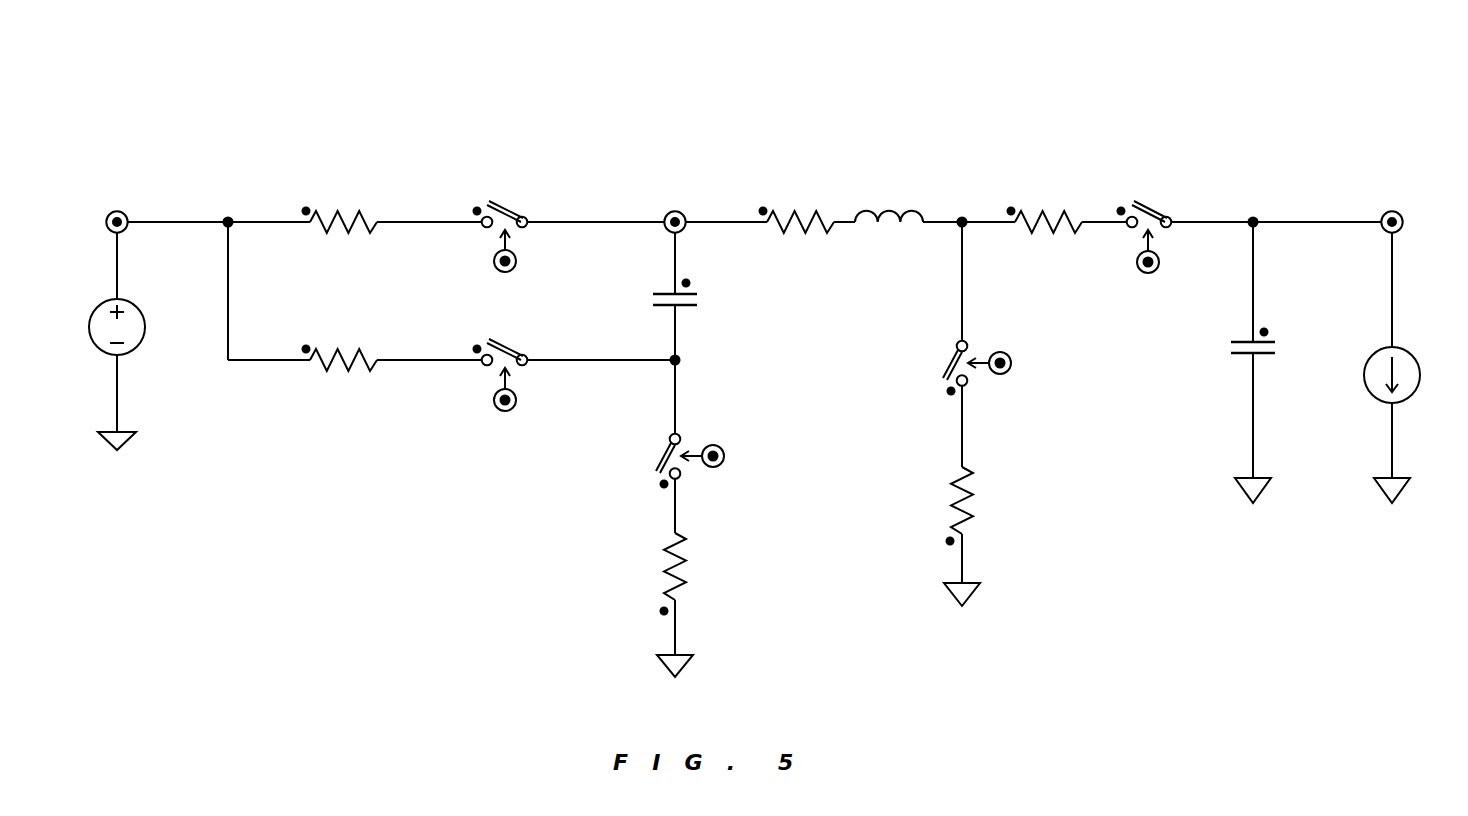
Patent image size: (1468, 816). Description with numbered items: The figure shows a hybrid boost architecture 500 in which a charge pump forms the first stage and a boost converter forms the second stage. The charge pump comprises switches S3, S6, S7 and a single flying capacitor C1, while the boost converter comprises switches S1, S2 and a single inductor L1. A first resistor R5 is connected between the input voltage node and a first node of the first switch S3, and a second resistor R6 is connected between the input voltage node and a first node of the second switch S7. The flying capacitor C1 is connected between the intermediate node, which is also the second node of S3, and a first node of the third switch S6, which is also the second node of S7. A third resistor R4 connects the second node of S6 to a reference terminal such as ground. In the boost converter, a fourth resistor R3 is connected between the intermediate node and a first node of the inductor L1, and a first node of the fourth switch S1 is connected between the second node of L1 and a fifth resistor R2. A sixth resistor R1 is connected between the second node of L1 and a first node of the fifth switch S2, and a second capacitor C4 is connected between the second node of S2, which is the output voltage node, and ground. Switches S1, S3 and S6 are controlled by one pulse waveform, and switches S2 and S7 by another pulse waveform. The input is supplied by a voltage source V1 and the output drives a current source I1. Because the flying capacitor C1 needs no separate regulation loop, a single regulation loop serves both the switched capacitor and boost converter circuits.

The boost architecture 500 is at (278, 87).
The input voltage source V1 is at (130, 327).
The load current source I1 is at (1405, 375).
The sixth resistor R1 is at (1045, 208).
The fifth resistor R2 is at (946, 506).
The fourth resistor R3 is at (797, 208).
The third resistor R4 is at (660, 574).
The first resistor R5 is at (340, 208).
The second resistor R6 is at (340, 347).
The inductor L1 is at (889, 202).
The flying capacitor C1 is at (688, 304).
The second capacitor C4 is at (1268, 351).
The fourth switch S1 is at (964, 360).
The fifth switch S2 is at (1151, 226).
The first switch S3 is at (506, 226).
The third switch S6 is at (677, 453).
The second switch S7 is at (507, 364).